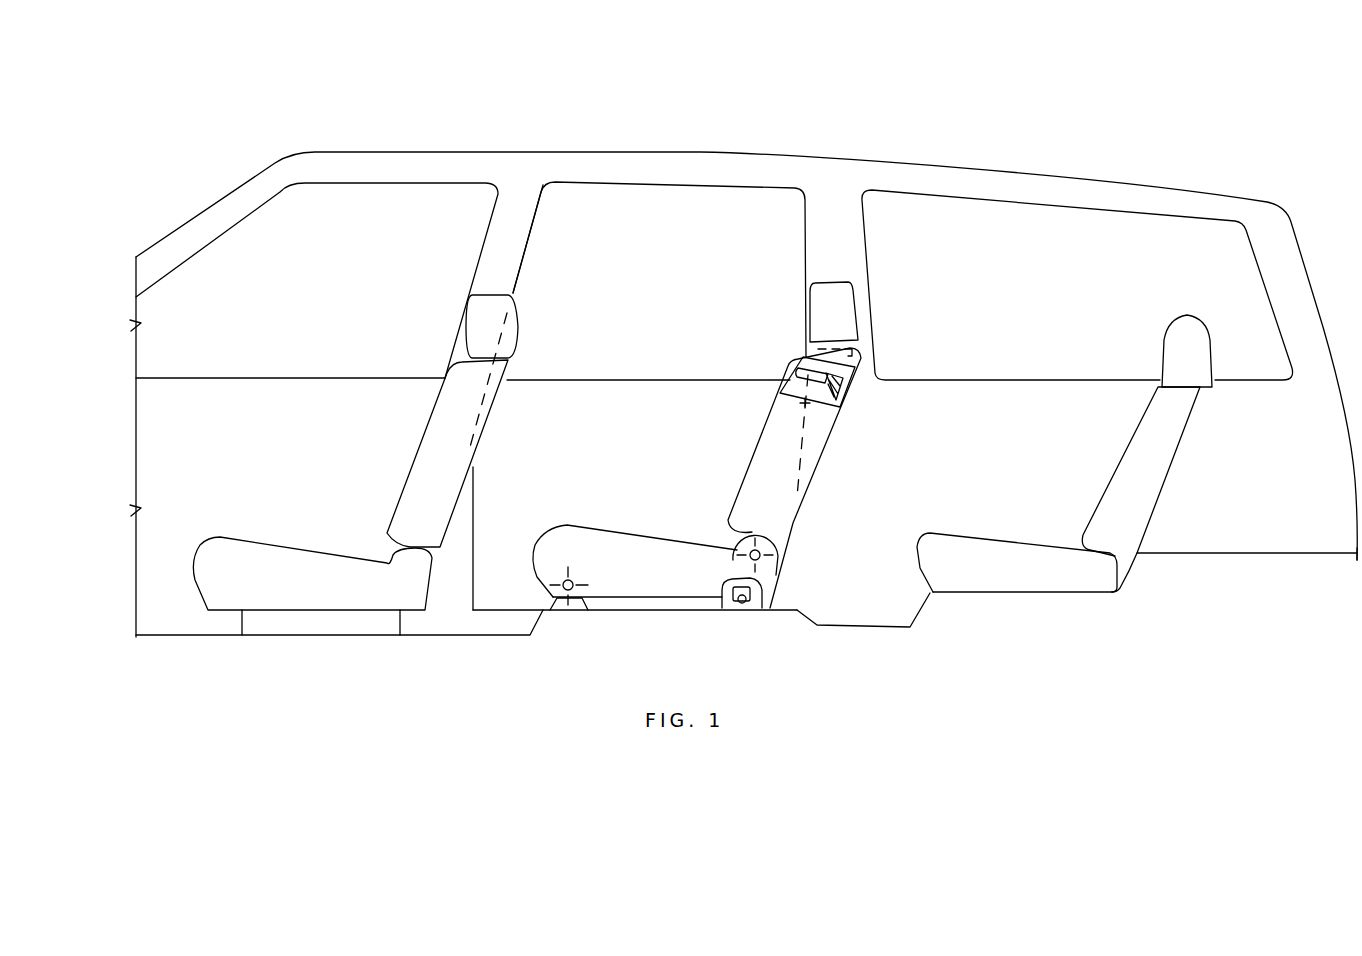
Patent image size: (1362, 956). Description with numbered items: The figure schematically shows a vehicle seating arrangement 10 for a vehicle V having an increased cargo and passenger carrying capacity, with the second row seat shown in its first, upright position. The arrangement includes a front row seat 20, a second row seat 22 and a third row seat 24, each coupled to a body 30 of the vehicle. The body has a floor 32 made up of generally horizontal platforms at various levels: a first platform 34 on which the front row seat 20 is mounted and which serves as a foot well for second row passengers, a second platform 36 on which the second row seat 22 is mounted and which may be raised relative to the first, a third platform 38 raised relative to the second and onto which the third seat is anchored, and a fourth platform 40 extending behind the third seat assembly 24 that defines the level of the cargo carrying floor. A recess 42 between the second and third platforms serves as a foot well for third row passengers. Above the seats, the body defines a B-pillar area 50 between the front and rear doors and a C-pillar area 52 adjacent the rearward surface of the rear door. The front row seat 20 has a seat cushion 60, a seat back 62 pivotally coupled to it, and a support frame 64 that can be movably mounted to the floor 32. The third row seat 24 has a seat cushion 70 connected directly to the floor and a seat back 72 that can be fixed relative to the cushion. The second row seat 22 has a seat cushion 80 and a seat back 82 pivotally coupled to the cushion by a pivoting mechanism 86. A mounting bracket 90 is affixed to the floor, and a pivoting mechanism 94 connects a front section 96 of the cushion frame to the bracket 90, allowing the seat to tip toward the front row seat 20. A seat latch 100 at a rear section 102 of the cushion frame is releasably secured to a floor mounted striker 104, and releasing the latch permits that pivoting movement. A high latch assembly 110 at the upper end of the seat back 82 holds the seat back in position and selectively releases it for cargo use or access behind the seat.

The vehicle V is at (395, 101).
The vehicle seating arrangement 10 is at (683, 242).
The front row seat 20 is at (273, 487).
The second row seat 22 is at (621, 403).
The third row seat 24 is at (1026, 415).
The vehicle body 30 is at (847, 666).
The floor 32 is at (450, 644).
The first platform 34 is at (173, 633).
The second platform 36 is at (680, 612).
The third platform 38 is at (1037, 595).
The fourth platform 40 is at (1247, 553).
The recess 42 is at (875, 625).
The B-pillar area 50 is at (527, 216).
The C-pillar area 52 is at (851, 232).
The seat cushion 60 is at (281, 547).
The seat back 62 is at (398, 475).
The support frame 64 is at (296, 630).
The seat cushion 70 is at (998, 541).
The seat back 72 is at (1168, 468).
The seat cushion 80 is at (623, 535).
The seat back 82 is at (753, 448).
The pivoting mechanism 86 is at (747, 547).
The mounting bracket 90 is at (560, 613).
The pivoting mechanism 94 is at (575, 580).
The front section 96 is at (542, 557).
The seat latch 100 is at (729, 612).
The rear section 102 is at (770, 570).
The floor mounted striker 104 is at (743, 610).
The high latch assembly 110 is at (860, 416).